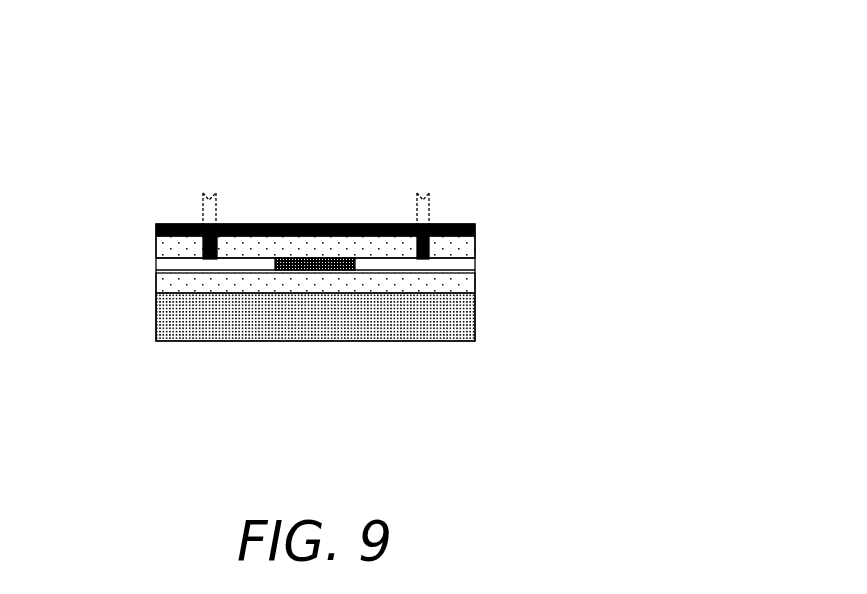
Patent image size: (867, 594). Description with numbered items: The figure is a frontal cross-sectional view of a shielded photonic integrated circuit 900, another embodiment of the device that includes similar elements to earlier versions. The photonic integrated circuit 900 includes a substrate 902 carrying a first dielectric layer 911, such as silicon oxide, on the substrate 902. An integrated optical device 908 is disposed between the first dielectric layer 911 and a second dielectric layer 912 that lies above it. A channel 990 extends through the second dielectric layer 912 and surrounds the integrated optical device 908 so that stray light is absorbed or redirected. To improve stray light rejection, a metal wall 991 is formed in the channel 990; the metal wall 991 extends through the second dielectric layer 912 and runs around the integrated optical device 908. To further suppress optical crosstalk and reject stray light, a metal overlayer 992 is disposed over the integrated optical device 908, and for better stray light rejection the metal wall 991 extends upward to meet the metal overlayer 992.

The photonic integrated circuit 900 is at (598, 63).
The substrate 902 is at (475, 313).
The integrated optical device 908 is at (315, 258).
The first dielectric layer 911 is at (157, 273).
The second dielectric layer 912 is at (475, 248).
The channel 990 is at (212, 202).
The metal wall 991 is at (414, 250).
The metal overlayer 992 is at (378, 224).